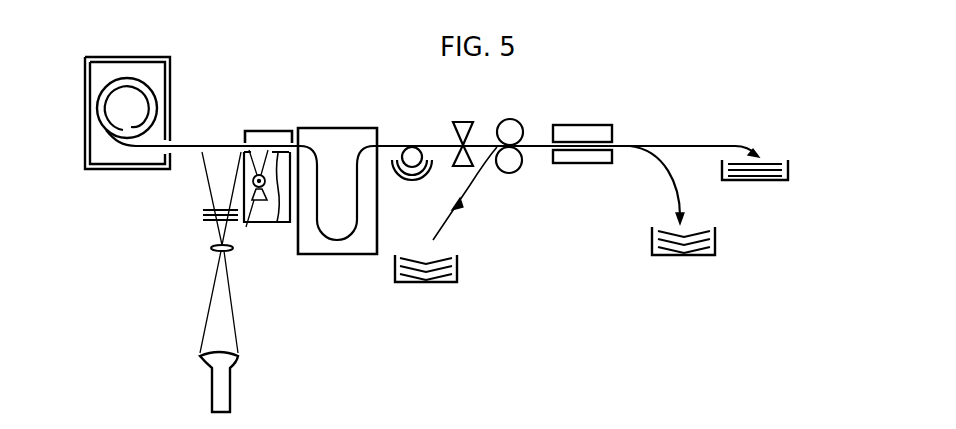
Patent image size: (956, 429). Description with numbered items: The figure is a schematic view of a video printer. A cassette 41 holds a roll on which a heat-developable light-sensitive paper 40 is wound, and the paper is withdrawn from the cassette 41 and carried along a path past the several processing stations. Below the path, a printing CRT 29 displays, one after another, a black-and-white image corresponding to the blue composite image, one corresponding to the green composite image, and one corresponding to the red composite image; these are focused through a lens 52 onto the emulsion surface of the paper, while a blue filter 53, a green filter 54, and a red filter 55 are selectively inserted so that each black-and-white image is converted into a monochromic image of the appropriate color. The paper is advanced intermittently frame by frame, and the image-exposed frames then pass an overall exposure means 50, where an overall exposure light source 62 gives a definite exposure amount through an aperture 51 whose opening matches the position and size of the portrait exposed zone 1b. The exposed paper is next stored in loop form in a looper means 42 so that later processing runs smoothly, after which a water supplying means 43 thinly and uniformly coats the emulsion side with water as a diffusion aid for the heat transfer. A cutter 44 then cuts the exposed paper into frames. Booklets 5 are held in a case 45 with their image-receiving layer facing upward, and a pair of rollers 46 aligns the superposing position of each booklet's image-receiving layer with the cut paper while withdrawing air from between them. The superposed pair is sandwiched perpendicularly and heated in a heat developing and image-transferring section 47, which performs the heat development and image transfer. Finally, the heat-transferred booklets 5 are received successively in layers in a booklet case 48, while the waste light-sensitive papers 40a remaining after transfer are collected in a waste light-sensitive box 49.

The heat-developable light-sensitive paper 40 is at (128, 80).
The cassette 41 is at (79, 120).
The portrait exposed zone 1b is at (208, 144).
The overall exposure means 50 is at (268, 130).
The overall exposure light source 62 is at (246, 227).
The aperture 51 is at (277, 224).
The looper means 42 is at (340, 126).
The water supplying means 43 is at (411, 153).
The cutter 44 is at (467, 121).
The pair of rollers 46 is at (513, 128).
The heat developing and image-transferring section 47 is at (585, 125).
The waste light-sensitive paper 40a is at (768, 160).
The waste light-sensitive box 49 is at (753, 183).
The booklet case 48 is at (655, 258).
The case 45 is at (449, 283).
The booklet 5 is at (439, 254).
The lens 52 is at (214, 254).
The blue filter 53 is at (203, 222).
The green filter 54 is at (203, 215).
The red filter 55 is at (203, 207).
The printing CRT 29 is at (212, 383).